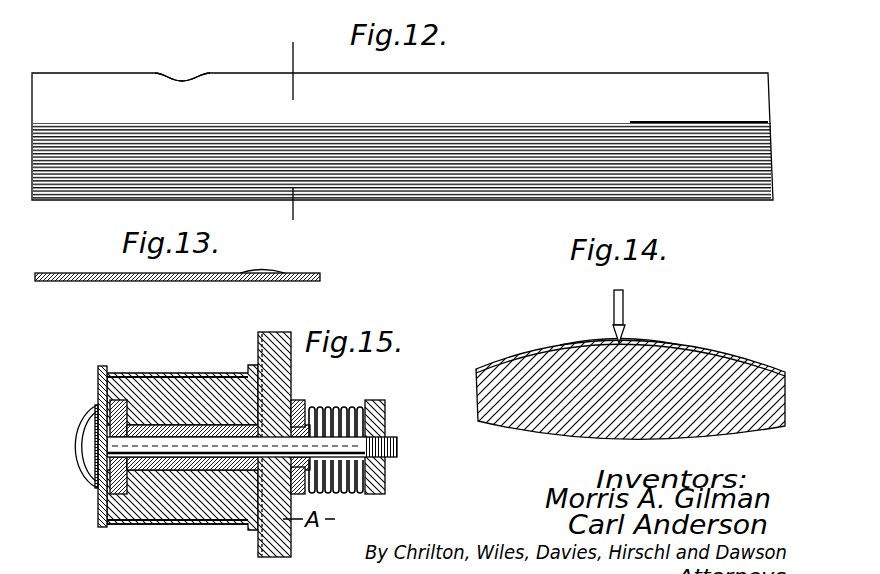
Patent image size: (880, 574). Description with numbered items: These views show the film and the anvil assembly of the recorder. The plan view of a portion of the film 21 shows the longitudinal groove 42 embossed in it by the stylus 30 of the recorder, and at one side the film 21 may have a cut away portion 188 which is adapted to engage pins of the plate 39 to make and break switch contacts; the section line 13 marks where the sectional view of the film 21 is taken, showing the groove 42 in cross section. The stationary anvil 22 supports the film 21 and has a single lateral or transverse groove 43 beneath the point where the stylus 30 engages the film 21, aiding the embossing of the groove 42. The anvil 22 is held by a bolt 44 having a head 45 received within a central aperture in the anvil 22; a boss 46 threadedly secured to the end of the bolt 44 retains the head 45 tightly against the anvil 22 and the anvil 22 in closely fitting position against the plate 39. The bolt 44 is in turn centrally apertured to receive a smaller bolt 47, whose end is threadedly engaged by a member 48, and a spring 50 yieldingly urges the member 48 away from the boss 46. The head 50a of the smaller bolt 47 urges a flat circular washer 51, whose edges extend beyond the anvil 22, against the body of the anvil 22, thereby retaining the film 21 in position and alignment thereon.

In FIG. 12, the film 21 is at (685, 78).
In FIG. 13, the film 21 is at (87, 281).
In FIG. 14, the film 21 is at (530, 352).
In FIG. 12, the cut away portion 188 is at (195, 58).
In FIG. 12, the section line 13 is at (312, 58).
In FIG. 12, the longitudinal groove 42 is at (457, 143).
In FIG. 13, the longitudinal groove 42 is at (263, 274).
In FIG. 14, the anvil 22 is at (508, 414).
In FIG. 15, the anvil 22 is at (200, 523).
In FIG. 14, the stylus 30 is at (627, 328).
In FIG. 14, the transverse groove 43 is at (630, 341).
In FIG. 15, the transverse groove 43 is at (147, 360).
In FIG. 15, the plate 39 is at (259, 345).
In FIG. 15, the head 45 is at (121, 495).
In FIG. 15, the bolt 44 is at (165, 468).
In FIG. 15, the boss 46 is at (296, 402).
In FIG. 15, the member 48 is at (386, 429).
In FIG. 15, the spring 50 is at (338, 407).
In FIG. 15, the smaller bolt 47 is at (240, 458).
In FIG. 15, the flat circular washer 51 is at (98, 528).
In FIG. 15, the head 50a is at (76, 463).